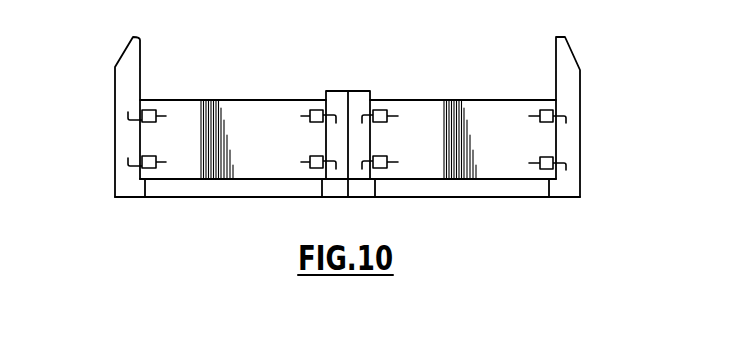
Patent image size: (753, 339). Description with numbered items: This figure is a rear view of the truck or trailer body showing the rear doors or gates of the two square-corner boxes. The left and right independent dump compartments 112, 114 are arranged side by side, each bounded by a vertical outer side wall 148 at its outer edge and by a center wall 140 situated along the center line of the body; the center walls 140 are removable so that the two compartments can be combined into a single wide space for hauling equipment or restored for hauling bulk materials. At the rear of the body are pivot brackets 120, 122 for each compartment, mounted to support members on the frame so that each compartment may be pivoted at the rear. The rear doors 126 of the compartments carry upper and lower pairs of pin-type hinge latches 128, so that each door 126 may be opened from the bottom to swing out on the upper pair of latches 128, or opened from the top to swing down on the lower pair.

The dump compartment 112 is at (245, 68).
The dump compartment 114 is at (474, 68).
The pivot bracket 120 is at (128, 197).
The pivot bracket 122 is at (362, 189).
The rear door 126 is at (230, 118).
The pin-type hinge latch 128 is at (115, 120).
The center wall 140 is at (358, 90).
The outer side wall 148 is at (115, 148).